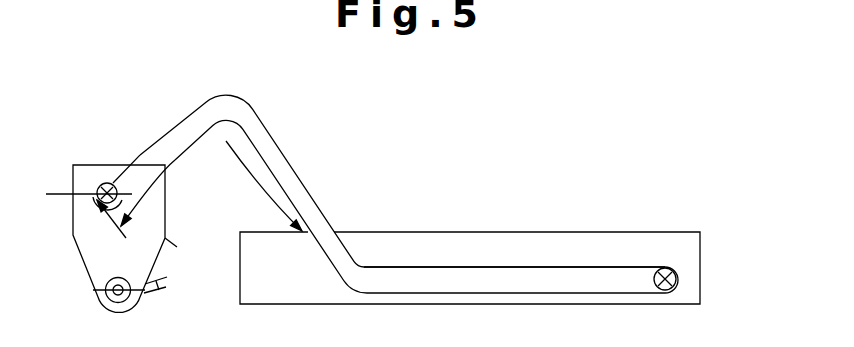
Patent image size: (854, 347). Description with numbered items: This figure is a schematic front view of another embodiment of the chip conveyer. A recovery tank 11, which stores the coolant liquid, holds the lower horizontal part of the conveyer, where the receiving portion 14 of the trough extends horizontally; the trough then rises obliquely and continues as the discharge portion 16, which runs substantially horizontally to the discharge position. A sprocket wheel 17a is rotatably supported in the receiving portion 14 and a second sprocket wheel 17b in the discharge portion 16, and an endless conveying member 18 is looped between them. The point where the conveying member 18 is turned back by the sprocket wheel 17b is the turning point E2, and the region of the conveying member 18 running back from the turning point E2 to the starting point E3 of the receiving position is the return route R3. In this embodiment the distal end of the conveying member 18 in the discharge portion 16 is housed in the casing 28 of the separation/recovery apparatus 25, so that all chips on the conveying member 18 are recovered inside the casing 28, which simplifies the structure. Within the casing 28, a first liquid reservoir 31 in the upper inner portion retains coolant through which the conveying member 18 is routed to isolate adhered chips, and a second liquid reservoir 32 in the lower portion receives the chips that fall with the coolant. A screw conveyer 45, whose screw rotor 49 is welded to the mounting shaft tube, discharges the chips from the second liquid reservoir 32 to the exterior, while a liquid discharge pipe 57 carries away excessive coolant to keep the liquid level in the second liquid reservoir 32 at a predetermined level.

The recovery tank 11 is at (451, 231).
The receiving portion 14 is at (597, 266).
The discharge portion 16 is at (164, 132).
The sprocket wheel 17a is at (678, 279).
The sprocket wheel 17b is at (107, 182).
The conveying member 18 is at (286, 157).
The separation/recovery apparatus 25 is at (76, 254).
The casing 28 is at (177, 247).
The first liquid reservoir 31 is at (93, 217).
The second liquid reservoir 32 is at (112, 312).
The screw conveyer 45 is at (152, 276).
The screw rotor 49 is at (93, 291).
The liquid discharge pipe 57 is at (160, 298).
The turning point E2 is at (72, 209).
The starting point of receiving position E3 is at (310, 226).
The return route R3 is at (226, 155).